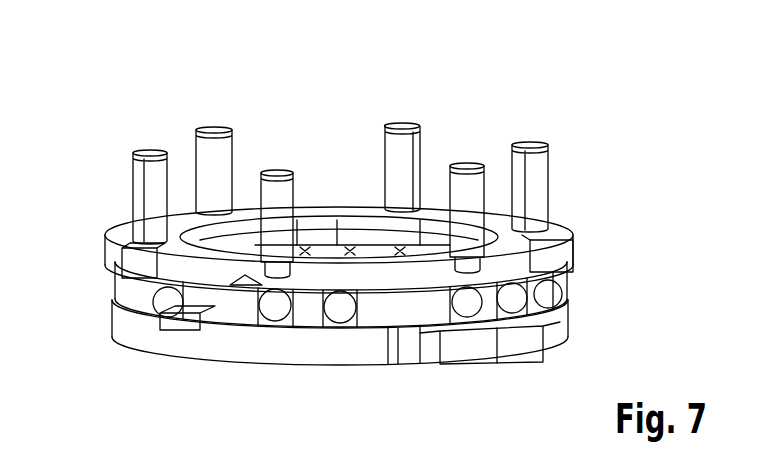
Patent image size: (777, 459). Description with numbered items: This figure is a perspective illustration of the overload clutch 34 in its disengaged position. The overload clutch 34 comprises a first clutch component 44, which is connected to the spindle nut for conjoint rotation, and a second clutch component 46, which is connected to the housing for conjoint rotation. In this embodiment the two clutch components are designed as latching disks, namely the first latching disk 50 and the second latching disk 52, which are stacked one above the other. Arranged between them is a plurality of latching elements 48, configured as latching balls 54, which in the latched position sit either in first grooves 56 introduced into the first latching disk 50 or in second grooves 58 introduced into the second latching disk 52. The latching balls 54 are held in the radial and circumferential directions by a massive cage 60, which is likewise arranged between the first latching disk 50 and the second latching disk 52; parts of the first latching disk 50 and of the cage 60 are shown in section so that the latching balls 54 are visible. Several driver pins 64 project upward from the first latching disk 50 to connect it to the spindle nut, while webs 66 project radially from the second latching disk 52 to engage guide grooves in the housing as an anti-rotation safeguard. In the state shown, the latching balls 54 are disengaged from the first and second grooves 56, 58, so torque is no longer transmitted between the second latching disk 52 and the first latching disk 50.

The overload clutch 34 is at (598, 130).
The first clutch component 44 is at (387, 250).
The first latching disk 50 is at (550, 259).
The second clutch component 46 is at (391, 368).
The second latching disk 52 is at (550, 328).
The latching elements 48 is at (392, 349).
The latching balls 54 is at (522, 297).
The first grooves 56 is at (256, 280).
The second grooves 58 is at (203, 318).
The cage 60 is at (383, 314).
The driver pins 64 is at (150, 151).
The webs 66 is at (485, 350).